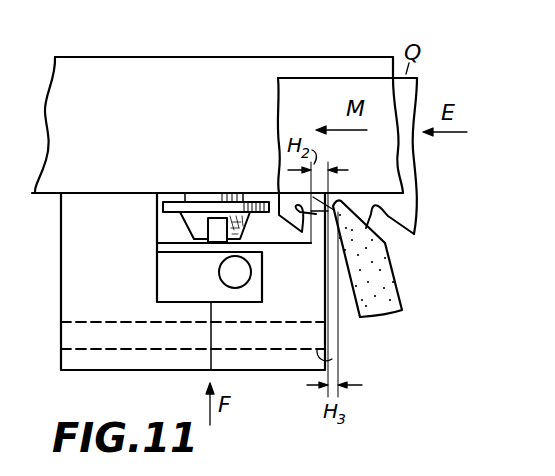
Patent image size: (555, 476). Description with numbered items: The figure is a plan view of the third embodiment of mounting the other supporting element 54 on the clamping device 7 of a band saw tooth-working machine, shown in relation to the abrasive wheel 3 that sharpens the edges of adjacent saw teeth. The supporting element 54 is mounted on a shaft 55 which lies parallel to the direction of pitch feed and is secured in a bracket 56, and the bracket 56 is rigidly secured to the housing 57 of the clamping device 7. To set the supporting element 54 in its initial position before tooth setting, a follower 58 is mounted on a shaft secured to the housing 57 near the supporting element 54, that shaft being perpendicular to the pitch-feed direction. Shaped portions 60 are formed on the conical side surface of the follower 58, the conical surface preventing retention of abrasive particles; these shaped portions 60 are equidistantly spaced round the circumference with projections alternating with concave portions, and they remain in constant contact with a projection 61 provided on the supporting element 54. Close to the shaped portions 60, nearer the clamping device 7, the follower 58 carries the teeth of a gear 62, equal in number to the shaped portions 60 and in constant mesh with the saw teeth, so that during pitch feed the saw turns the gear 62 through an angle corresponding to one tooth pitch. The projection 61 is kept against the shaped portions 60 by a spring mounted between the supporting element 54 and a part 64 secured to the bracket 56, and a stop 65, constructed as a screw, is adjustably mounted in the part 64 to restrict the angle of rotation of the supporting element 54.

The abrasive wheel 3 is at (388, 277).
The clamping device 7 is at (209, 56).
The other supporting element 54 is at (278, 360).
The shaft 55 is at (333, 360).
The bracket 56 is at (152, 359).
The housing 57 is at (121, 63).
The follower 58 is at (255, 193).
The shaped portions 60 is at (250, 216).
The projection 61 is at (208, 231).
The gear 62 is at (176, 205).
The part 64 is at (166, 277).
The stop 65 is at (243, 276).